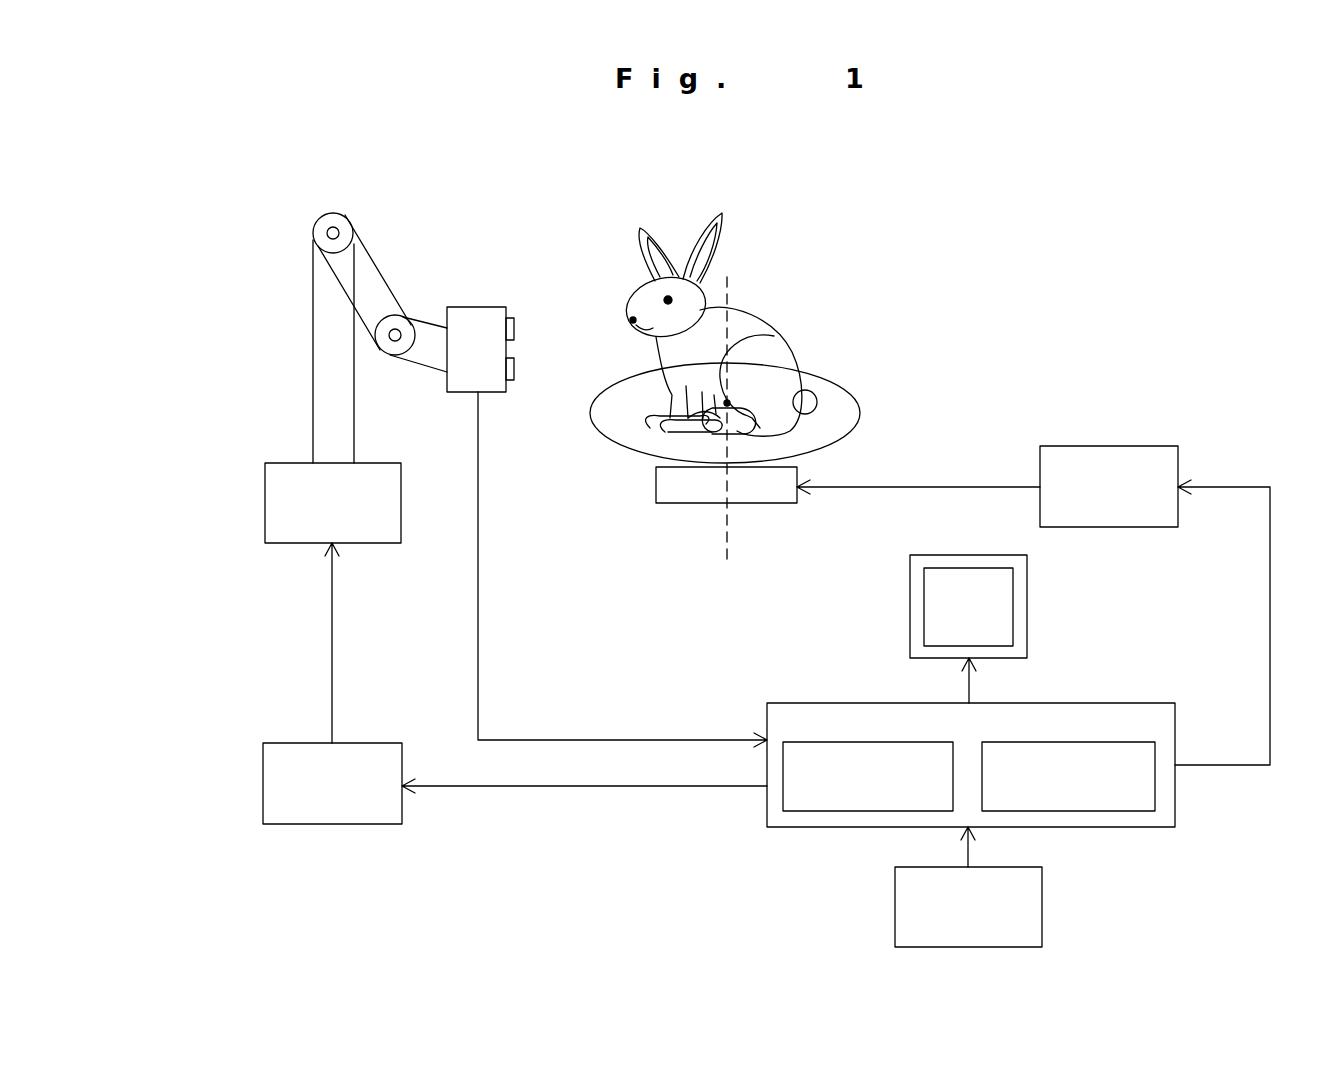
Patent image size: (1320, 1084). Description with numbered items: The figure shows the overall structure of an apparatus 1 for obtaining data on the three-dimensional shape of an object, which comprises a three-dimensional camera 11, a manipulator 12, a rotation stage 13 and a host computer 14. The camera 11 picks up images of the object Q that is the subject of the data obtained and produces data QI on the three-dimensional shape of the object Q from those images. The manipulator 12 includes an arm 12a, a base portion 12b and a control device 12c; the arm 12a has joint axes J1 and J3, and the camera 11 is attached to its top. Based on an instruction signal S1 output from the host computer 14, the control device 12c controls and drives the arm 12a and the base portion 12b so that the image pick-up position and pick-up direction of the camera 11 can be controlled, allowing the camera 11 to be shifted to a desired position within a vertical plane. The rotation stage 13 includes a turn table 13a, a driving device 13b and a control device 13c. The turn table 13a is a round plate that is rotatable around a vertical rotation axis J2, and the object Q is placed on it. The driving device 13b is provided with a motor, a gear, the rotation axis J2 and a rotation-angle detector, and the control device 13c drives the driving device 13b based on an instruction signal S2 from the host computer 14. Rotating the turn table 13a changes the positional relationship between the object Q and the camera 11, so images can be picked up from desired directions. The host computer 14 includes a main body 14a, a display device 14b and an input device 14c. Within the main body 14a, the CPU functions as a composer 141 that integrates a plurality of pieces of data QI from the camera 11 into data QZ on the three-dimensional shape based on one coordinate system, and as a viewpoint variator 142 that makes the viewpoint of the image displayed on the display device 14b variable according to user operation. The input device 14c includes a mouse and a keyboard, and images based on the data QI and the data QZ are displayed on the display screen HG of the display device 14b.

The apparatus for obtaining data on the three-dimensional shape 1 is at (388, 170).
The three-dimensional camera 11 is at (478, 315).
The manipulator 12 is at (148, 387).
The arm 12a is at (313, 405).
The base portion 12b is at (265, 505).
The control device 12c is at (300, 743).
The rotation stage 13 is at (1197, 345).
The turn table 13a is at (840, 418).
The driving device 13b is at (788, 483).
The control device 13c is at (1100, 446).
The host computer 14 is at (1168, 863).
The main body 14a is at (767, 805).
The display device 14b is at (910, 597).
The input device 14c is at (1042, 900).
The composer 141 is at (805, 811).
The viewpoint variator 142 is at (1155, 790).
The joint axis J1 is at (342, 233).
The rotation axis J2 is at (729, 539).
The joint axis J3 is at (395, 335).
The object Q is at (750, 326).
The data on the three-dimensional shape QI is at (478, 567).
The data on the three-dimensional shape based on one coordinate system QZ is at (969, 683).
The display screen HG is at (1005, 580).
The instruction signal S1 is at (580, 787).
The instruction signal S2 is at (1207, 765).